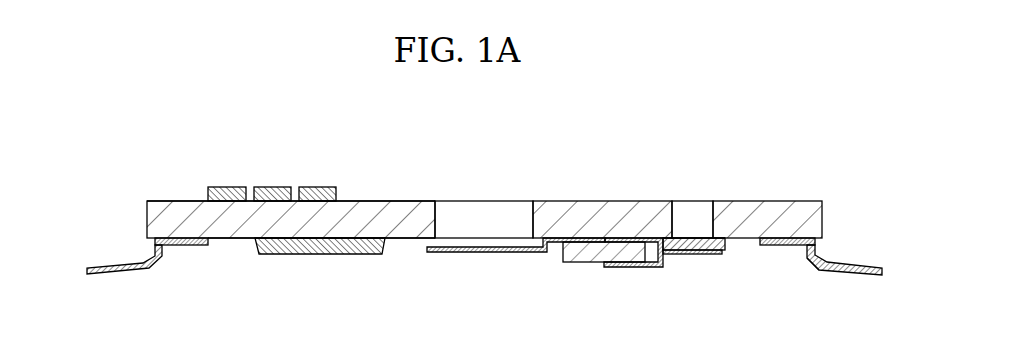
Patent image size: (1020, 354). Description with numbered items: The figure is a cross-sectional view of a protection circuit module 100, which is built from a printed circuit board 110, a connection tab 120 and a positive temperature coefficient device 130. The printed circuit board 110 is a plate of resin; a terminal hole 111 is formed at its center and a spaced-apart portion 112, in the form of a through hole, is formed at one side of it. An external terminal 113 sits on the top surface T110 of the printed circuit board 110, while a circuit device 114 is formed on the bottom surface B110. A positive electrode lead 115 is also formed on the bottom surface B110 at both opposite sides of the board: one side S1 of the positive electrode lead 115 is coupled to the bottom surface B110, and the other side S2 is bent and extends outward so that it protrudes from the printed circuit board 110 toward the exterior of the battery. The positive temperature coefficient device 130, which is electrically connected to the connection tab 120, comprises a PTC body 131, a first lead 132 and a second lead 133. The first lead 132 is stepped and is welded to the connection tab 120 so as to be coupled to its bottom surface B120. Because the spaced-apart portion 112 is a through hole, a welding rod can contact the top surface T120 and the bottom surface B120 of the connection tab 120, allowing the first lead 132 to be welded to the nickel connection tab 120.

The protection circuit module 100 is at (93, 142).
The printed circuit board 110 is at (784, 207).
The terminal hole 111 is at (473, 207).
The spaced-apart portion 112 is at (709, 207).
The top surface of the printed circuit board T110 is at (177, 201).
The bottom surface of the printed circuit board B110 is at (233, 242).
The external terminal 113 is at (313, 186).
The circuit device 114 is at (317, 256).
The positive electrode lead 115 is at (118, 277).
The one side of the positive electrode lead S1 is at (790, 246).
The other side of the positive electrode lead S2 is at (837, 258).
The positive temperature coefficient device 130 is at (555, 187).
The PTC body 131 is at (608, 247).
The first lead 132 is at (643, 206).
The second lead 133 is at (545, 246).
The connection tab 120 is at (724, 249).
The top surface of the connection tab T120 is at (685, 238).
The bottom surface of the connection tab B120 is at (692, 255).